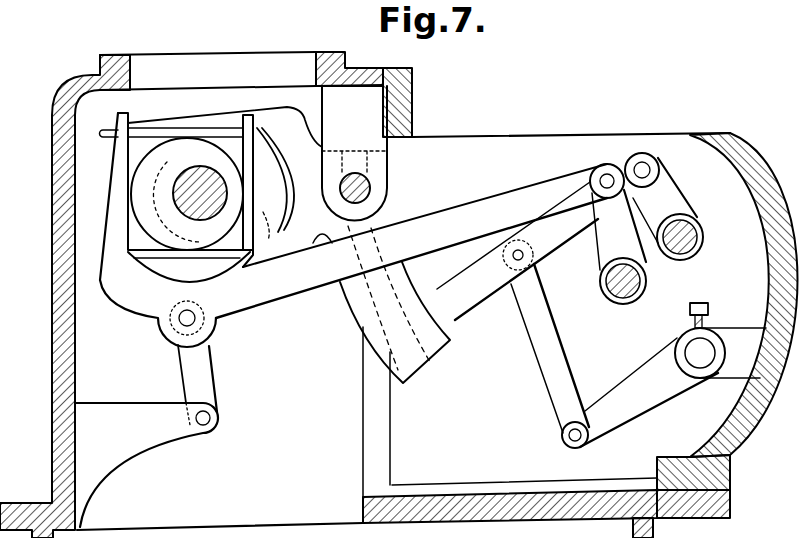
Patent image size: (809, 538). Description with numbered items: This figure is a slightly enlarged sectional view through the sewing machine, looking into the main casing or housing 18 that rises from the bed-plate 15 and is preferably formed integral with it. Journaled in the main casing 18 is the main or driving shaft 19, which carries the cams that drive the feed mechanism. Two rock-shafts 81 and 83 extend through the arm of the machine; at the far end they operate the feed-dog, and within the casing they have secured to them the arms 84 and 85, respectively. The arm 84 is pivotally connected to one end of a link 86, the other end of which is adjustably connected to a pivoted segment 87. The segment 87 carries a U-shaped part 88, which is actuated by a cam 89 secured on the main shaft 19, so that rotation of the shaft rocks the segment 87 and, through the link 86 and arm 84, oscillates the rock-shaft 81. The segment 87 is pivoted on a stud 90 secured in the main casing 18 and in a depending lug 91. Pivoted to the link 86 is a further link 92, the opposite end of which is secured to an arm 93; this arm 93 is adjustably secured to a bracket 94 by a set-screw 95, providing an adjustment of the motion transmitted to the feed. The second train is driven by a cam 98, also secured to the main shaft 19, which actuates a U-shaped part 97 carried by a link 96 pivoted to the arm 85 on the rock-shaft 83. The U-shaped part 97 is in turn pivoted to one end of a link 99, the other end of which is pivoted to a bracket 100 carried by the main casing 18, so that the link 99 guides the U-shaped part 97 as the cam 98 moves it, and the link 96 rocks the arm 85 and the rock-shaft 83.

The bed-plate 15 is at (520, 513).
The main casing 18 is at (52, 223).
The main shaft 19 is at (176, 189).
The rock-shaft 81 is at (703, 236).
The rock-shaft 83 is at (611, 300).
The arm 84 is at (661, 198).
The arm 85 is at (618, 217).
The link 86 is at (517, 251).
The pivoted segment 87 is at (362, 312).
The U-shaped part 88 is at (283, 143).
The cam 89 is at (228, 143).
The stud 90 is at (370, 188).
The depending lug 91 is at (354, 153).
The link 92 is at (546, 350).
The arm 93 is at (649, 392).
The bracket 94 is at (720, 352).
The set-screw 95 is at (704, 304).
The link 96 is at (411, 241).
The U-shaped part 97 is at (177, 230).
The cam 98 is at (187, 194).
The link 99 is at (184, 371).
The bracket 100 is at (146, 465).